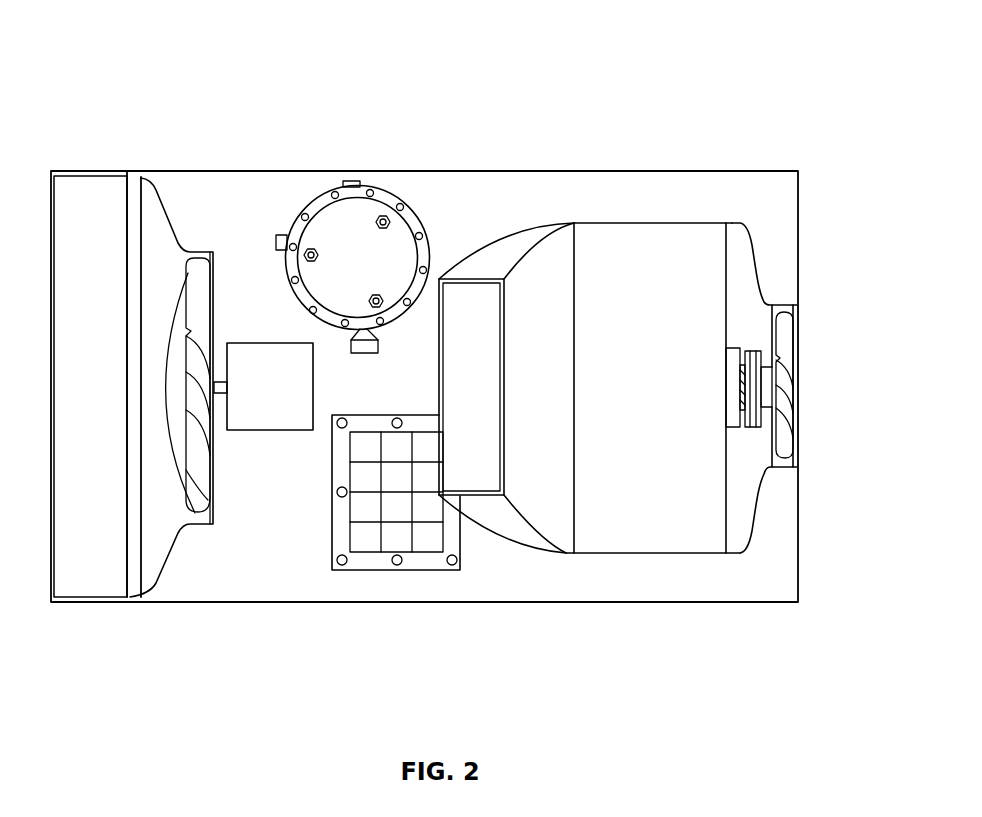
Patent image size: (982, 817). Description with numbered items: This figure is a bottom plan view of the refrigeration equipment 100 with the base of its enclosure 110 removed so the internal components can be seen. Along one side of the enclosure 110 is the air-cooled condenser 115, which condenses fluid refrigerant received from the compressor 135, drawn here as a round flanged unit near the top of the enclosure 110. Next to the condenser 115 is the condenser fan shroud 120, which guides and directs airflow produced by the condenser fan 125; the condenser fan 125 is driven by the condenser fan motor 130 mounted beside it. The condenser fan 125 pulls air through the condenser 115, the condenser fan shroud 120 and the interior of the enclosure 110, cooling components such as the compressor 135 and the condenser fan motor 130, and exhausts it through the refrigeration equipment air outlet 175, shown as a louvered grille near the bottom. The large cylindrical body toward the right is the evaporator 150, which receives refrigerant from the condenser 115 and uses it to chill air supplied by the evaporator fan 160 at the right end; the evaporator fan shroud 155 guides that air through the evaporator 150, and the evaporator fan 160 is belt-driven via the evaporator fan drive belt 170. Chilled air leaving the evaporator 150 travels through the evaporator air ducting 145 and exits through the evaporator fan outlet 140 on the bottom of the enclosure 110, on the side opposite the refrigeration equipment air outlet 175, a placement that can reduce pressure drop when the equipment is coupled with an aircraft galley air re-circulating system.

The refrigeration equipment 100 is at (716, 54).
The enclosure 110 is at (527, 181).
The air-cooled condenser 115 is at (84, 193).
The condenser fan shroud 120 is at (132, 185).
The condenser fan 125 is at (202, 272).
The condenser fan motor 130 is at (240, 352).
The compressor 135 is at (358, 217).
The evaporator fan outlet 140 is at (468, 460).
The evaporator air ducting 145 is at (565, 535).
The evaporator 150 is at (693, 542).
The evaporator fan shroud 155 is at (740, 510).
The evaporator fan 160 is at (783, 330).
The evaporator fan drive belt 170 is at (755, 352).
The refrigeration equipment air outlet 175 is at (376, 562).